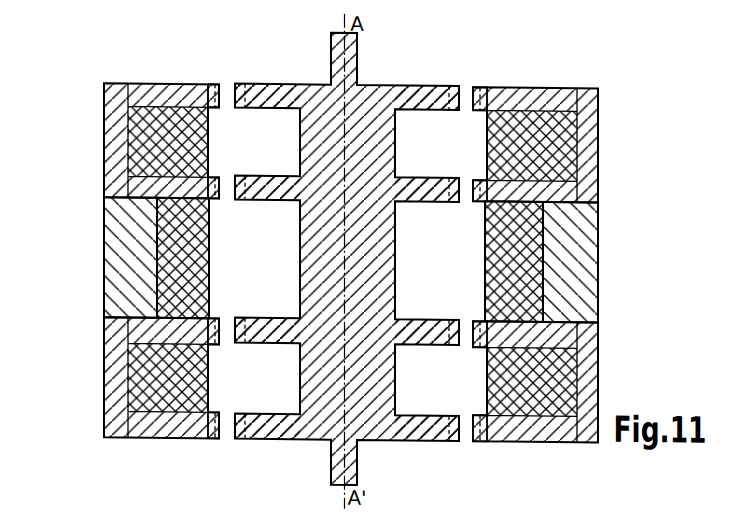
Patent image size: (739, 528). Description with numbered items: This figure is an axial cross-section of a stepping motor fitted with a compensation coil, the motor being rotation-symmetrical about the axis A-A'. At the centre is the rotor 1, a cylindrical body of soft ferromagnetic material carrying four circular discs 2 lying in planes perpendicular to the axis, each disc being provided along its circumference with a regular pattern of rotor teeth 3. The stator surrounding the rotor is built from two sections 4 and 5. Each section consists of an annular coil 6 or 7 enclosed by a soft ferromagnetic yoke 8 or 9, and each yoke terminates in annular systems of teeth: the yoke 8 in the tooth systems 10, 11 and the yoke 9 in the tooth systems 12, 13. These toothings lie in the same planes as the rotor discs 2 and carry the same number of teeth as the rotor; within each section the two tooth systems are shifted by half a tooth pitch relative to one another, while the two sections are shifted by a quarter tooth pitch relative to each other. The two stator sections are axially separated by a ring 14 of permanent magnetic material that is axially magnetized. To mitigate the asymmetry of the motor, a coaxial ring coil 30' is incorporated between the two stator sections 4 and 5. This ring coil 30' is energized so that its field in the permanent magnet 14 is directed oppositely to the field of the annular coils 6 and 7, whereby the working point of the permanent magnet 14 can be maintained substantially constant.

The rotor 1 is at (362, 114).
The circular discs 2 is at (281, 88).
The rotor teeth 3 is at (245, 84).
The stator section 4 is at (549, 112).
The stator section 5 is at (552, 419).
The annular coil 6 is at (135, 150).
The annular coil 7 is at (140, 370).
The yoke 8 is at (117, 170).
The yoke 9 is at (117, 403).
The annular system of teeth 10 is at (217, 82).
The annular system of teeth 11 is at (217, 181).
The annular system of teeth 12 is at (216, 322).
The annular system of teeth 13 is at (211, 428).
The ring of permanent magnetic material 14 is at (121, 256).
The coaxial ring coil 30' is at (350, 260).